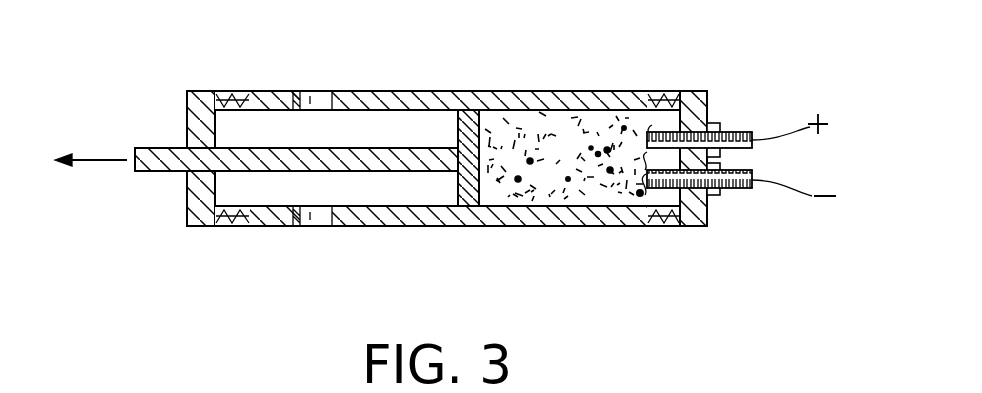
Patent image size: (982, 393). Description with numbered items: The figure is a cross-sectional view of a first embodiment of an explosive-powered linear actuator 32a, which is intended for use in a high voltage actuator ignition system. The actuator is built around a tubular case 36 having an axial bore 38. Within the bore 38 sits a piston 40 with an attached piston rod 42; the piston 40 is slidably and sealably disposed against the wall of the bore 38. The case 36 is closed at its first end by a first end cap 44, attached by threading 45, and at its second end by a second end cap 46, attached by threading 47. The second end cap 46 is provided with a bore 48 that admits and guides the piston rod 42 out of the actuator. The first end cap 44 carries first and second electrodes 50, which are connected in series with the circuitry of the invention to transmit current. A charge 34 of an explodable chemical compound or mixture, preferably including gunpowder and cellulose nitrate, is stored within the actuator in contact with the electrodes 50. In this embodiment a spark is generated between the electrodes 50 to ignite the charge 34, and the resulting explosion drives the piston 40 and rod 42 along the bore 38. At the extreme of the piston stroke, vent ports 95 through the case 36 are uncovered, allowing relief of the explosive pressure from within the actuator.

The linear actuator 32a is at (533, 68).
The charge 34 is at (582, 196).
The tubular case 36 is at (430, 91).
The axial bore 38 is at (387, 122).
The piston 40 is at (458, 192).
The piston rod 42 is at (355, 172).
The first end cap 44 is at (708, 102).
The threading 45 is at (665, 96).
The second end cap 46 is at (187, 93).
The threading 47 is at (238, 98).
The bore 48 is at (187, 191).
The electrodes 50 is at (721, 133).
The vent ports 95 is at (312, 97).